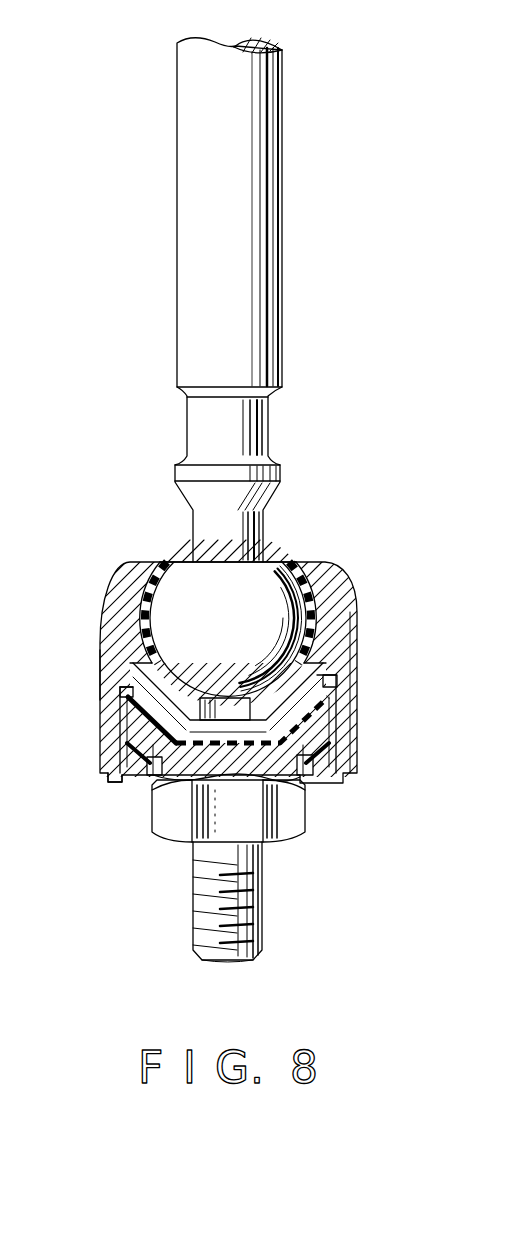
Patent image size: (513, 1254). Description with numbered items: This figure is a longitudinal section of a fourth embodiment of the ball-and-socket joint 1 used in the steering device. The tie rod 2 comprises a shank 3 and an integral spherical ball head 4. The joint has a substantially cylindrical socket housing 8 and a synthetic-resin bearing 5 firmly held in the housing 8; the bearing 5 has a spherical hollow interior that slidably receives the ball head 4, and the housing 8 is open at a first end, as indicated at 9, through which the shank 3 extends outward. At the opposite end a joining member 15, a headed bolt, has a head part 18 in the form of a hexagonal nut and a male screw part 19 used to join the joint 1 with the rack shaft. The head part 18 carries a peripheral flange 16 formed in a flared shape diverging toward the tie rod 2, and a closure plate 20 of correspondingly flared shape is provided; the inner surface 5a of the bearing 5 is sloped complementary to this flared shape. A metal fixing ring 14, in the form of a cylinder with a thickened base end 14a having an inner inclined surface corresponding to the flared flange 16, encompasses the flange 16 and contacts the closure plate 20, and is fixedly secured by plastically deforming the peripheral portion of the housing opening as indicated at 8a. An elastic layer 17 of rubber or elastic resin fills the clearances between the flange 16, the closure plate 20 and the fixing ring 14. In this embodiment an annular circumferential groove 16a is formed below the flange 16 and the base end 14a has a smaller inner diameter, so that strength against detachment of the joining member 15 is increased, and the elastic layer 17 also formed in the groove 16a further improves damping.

The ball-and-socket joint 1 is at (363, 563).
The tie rod 2 is at (285, 242).
The shank 3 is at (270, 414).
The ball head 4 is at (263, 582).
The bearing 5 is at (313, 617).
The inner surface of the bearing 5a is at (140, 688).
The socket housing 8 is at (348, 652).
The plastically deformed peripheral portion of the housing opening 8a is at (118, 782).
The opening at first end of housing 9 is at (157, 562).
The fixing ring 14 is at (125, 730).
The base end of fixing ring 14a is at (142, 780).
The joining member 15 is at (264, 874).
The peripheral flange 16 is at (313, 735).
The annular circumferential groove 16a is at (313, 790).
The elastic layer 17 is at (190, 693).
The head part 18 is at (307, 832).
The male screw part 19 is at (195, 895).
The closure plate 20 is at (323, 685).